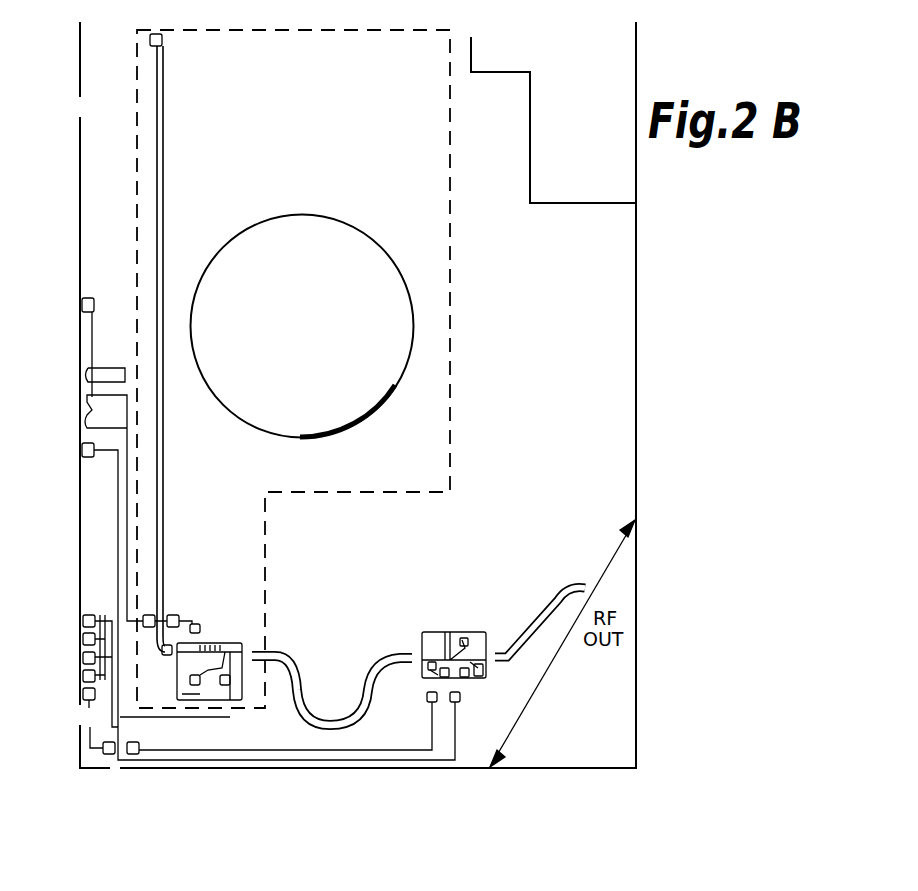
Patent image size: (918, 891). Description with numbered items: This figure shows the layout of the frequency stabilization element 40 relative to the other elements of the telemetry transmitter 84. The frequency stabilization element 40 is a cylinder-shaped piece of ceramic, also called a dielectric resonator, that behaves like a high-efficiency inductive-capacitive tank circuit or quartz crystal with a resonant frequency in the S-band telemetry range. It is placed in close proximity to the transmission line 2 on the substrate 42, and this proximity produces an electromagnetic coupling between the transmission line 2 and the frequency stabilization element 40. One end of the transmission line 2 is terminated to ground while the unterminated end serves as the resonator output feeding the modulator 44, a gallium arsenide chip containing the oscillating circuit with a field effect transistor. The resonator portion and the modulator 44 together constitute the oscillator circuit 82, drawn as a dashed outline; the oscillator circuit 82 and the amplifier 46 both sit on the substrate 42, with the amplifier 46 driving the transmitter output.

The transmission line 2 is at (163, 215).
The frequency stabilization element 40 is at (345, 222).
The substrate 42 is at (636, 320).
The modulator 44 is at (215, 643).
The amplifier 46 is at (460, 632).
The oscillator circuit 82 is at (450, 296).
The telemetry transmitter 84 is at (655, 263).